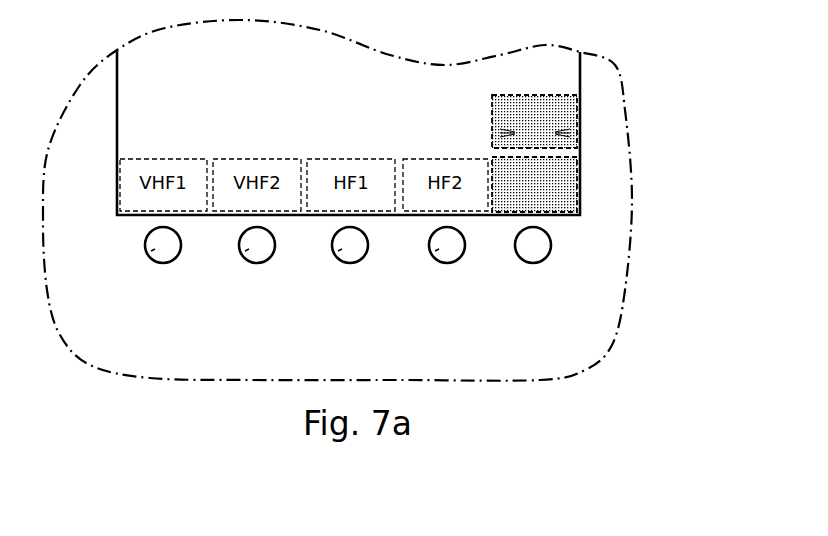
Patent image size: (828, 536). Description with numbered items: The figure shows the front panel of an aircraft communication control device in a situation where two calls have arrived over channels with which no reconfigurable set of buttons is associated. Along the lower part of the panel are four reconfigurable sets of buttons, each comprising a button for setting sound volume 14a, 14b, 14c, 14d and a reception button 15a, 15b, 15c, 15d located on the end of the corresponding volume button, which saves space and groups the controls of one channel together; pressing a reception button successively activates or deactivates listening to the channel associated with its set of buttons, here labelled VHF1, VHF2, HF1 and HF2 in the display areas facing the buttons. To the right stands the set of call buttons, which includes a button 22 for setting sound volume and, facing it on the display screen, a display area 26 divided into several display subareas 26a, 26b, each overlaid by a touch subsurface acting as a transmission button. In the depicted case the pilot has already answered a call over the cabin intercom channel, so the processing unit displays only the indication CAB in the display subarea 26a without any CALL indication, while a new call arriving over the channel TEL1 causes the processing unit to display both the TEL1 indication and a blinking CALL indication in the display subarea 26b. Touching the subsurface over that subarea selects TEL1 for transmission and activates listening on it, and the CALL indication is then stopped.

The button for setting sound volume 14a is at (163, 263).
The button for setting sound volume 14b is at (257, 263).
The button for setting sound volume 14c is at (350, 263).
The button for setting sound volume 14d is at (447, 263).
The reception button 15a is at (152, 250).
The reception button 15b is at (246, 250).
The reception button 15c is at (339, 250).
The reception button 15d is at (436, 250).
The button for setting sound volume 22 is at (533, 263).
The display area 26 is at (558, 147).
The display subarea 26a is at (580, 181).
The display subarea 26b is at (580, 118).